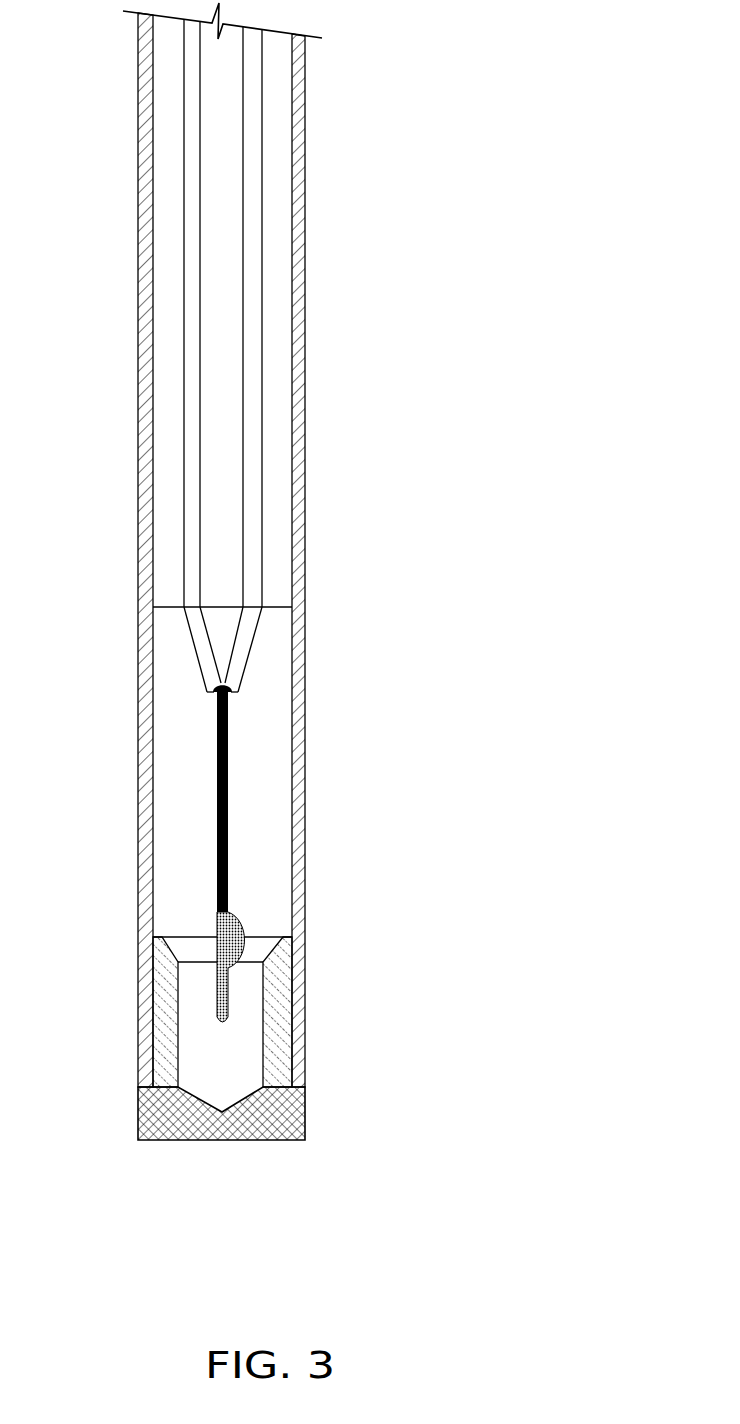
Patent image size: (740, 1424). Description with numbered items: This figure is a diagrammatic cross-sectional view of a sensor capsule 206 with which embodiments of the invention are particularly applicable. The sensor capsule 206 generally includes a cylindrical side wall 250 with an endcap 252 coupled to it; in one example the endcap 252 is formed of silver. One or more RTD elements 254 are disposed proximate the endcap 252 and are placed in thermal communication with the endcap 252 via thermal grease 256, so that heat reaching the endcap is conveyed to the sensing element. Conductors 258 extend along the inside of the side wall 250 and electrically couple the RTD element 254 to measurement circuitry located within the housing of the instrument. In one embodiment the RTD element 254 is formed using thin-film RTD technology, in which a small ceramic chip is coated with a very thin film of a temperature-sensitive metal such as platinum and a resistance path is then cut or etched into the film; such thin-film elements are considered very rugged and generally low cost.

The sensor capsule 206 is at (582, 556).
The cylindrical side wall 250 is at (138, 902).
The endcap 252 is at (260, 1127).
The RTD element 254 is at (230, 1000).
The thermal grease 256 is at (213, 1089).
The conductors 258 is at (243, 385).